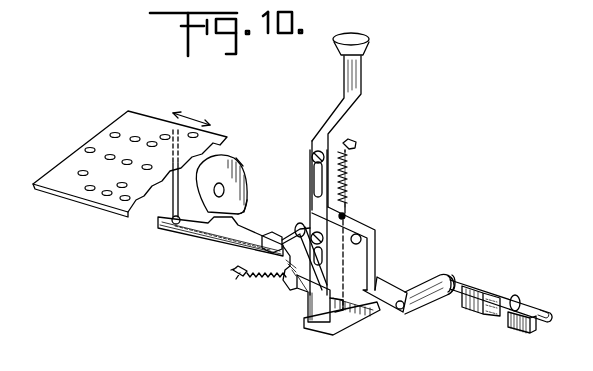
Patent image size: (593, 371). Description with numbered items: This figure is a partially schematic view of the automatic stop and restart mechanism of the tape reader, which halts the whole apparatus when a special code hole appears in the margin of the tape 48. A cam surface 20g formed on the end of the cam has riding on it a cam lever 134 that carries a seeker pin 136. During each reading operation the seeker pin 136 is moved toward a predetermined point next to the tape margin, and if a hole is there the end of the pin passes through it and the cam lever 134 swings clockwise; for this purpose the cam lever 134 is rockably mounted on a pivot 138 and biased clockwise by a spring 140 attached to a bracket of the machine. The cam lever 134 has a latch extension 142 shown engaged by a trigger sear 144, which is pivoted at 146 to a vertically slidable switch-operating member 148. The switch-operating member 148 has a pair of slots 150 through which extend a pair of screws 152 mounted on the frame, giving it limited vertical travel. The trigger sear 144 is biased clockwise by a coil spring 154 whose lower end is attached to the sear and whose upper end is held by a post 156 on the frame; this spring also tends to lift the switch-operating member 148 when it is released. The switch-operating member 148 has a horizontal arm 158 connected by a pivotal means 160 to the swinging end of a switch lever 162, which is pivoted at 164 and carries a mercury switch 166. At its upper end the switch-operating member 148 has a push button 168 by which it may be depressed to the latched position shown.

The perforated plate 48 is at (100, 138).
The cam surface 20g is at (233, 173).
The cam lever 134 is at (207, 231).
The seeker pin 136 is at (174, 190).
The pivot 138 is at (294, 226).
The spring 140 is at (248, 288).
The latch extension 142 is at (313, 305).
The trigger sear 144 is at (318, 330).
The pivot 146 is at (360, 242).
The switch-operating member 148 is at (360, 262).
The slots 150 is at (315, 180).
The screws 152 is at (312, 156).
The coil spring 154 is at (348, 177).
The post 156 is at (356, 146).
The horizontal arm 158 is at (387, 307).
The pivotal means 160 is at (427, 287).
The switch lever 162 is at (466, 285).
The pivot 164 is at (517, 305).
The mercury switch 166 is at (461, 302).
The push button 168 is at (357, 40).